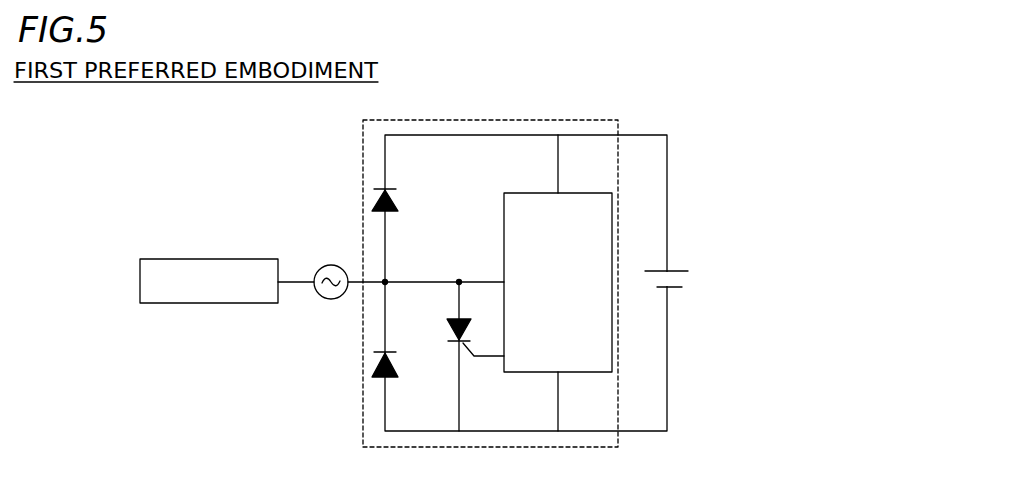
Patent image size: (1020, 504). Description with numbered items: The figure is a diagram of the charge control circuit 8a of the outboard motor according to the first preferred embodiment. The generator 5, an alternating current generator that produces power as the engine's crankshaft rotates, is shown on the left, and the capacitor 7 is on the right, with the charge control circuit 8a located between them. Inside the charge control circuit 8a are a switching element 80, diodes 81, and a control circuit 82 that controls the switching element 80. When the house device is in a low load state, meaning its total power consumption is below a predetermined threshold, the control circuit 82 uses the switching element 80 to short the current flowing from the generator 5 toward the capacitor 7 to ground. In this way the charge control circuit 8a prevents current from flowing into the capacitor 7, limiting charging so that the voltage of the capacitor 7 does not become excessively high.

The generator 5 is at (262, 259).
The capacitor 7 is at (680, 269).
The charge control circuit 8a is at (574, 113).
The switching element 80 is at (462, 317).
The diodes 81 is at (390, 186).
The control circuit 82 is at (564, 193).